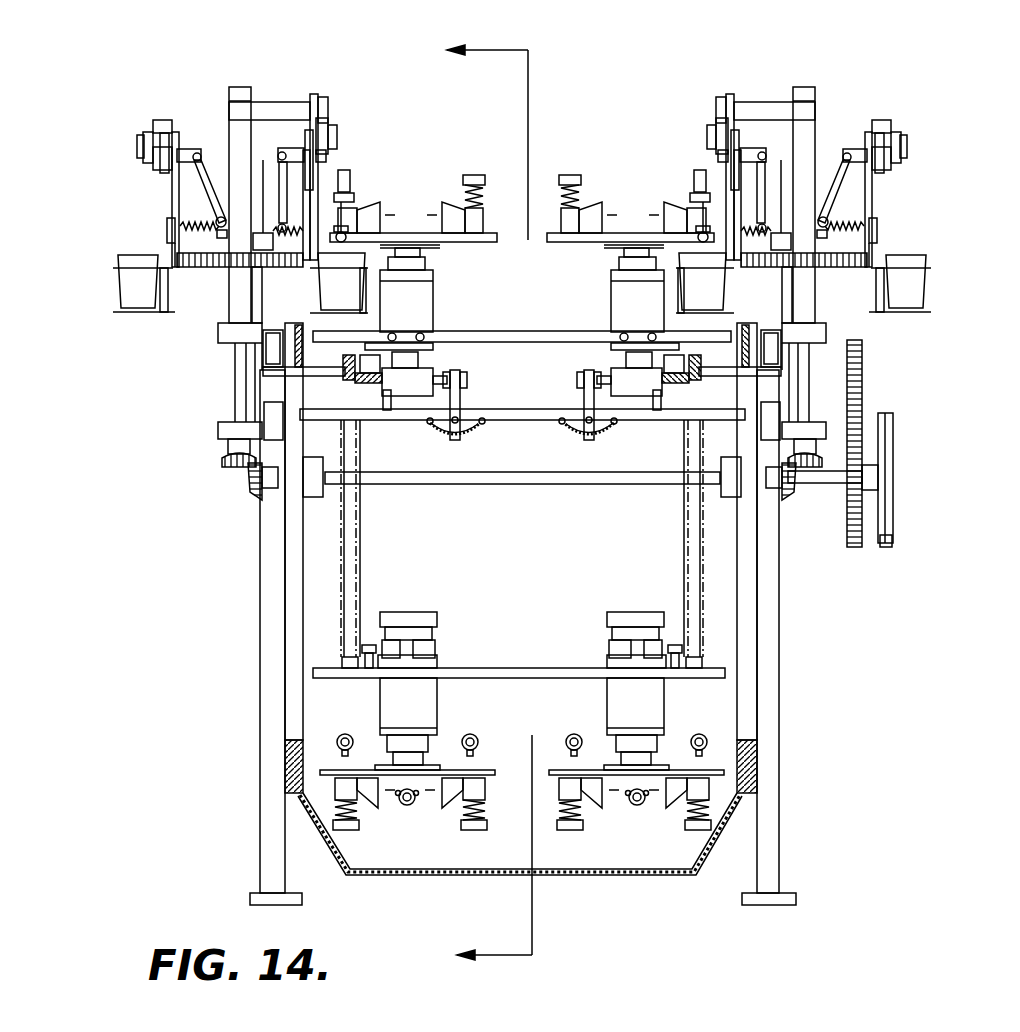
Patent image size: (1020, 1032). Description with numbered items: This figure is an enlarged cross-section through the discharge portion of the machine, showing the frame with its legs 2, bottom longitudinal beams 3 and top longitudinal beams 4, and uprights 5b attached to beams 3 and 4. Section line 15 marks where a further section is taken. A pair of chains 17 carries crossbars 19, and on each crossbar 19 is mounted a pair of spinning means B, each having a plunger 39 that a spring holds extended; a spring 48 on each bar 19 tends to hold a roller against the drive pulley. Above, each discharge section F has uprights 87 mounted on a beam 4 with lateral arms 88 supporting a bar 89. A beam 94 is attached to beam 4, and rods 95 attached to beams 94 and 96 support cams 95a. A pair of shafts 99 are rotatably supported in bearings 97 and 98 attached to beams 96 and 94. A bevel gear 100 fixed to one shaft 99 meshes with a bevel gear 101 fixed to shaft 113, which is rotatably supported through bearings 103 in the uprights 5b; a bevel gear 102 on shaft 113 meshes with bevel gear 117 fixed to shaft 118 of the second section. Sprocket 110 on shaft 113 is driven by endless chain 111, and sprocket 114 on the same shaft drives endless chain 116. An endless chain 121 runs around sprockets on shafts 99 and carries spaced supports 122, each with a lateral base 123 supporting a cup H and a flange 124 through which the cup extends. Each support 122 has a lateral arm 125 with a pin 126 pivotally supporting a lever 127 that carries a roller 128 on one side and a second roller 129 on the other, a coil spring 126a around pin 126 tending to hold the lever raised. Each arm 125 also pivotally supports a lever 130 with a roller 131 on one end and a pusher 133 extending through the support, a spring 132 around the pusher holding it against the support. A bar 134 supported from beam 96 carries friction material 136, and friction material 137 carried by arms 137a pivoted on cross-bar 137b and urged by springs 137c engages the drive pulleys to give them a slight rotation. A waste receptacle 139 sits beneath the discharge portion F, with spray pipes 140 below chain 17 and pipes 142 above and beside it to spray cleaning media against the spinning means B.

The legs 2 is at (270, 851).
The longitudinal beams 3 is at (286, 779).
The longitudinal beams 4 is at (303, 360).
The uprights 5b is at (810, 611).
The section line 15 is at (489, 495).
The chains 17 is at (362, 574).
The crossbar 19 is at (490, 332).
The plunger 39 is at (352, 192).
The spring 48 is at (818, 332).
The uprights 87 is at (238, 87).
The lateral arms 88 is at (265, 102).
The bar 89 is at (328, 106).
The beam 94 is at (236, 354).
The rods 95 is at (255, 383).
The cams 95a is at (830, 137).
The beam 96 is at (307, 432).
The bearings 97 is at (218, 432).
The bearings 98 is at (218, 332).
The shafts 99 is at (246, 366).
The bevel gear 100 is at (220, 470).
The bevel gear 101 is at (248, 494).
The bevel gear 102 is at (787, 497).
The bearings 103 is at (320, 477).
The sprocket 110 is at (847, 537).
The endless chain 111 is at (880, 510).
The shaft 113 is at (435, 485).
The sprocket 114 is at (878, 471).
The endless chain 116 is at (887, 548).
The bevel gear 117 is at (800, 462).
The shaft 118 is at (800, 387).
The endless chain 121 is at (240, 268).
The supports 122 is at (172, 208).
The lateral base 123 is at (892, 313).
The flange 124 is at (898, 268).
The lateral arm 125 is at (192, 150).
The pin 126 is at (163, 172).
The coil springs 126a is at (710, 147).
The lever 127 is at (145, 133).
The roller 128 is at (154, 128).
The roller 129 is at (138, 150).
The lever 130 is at (207, 186).
The roller 131 is at (220, 267).
The spring 132 is at (201, 224).
The pusher 133 is at (167, 230).
The bar 134 is at (355, 395).
The friction material 136 is at (384, 405).
The friction material 137 is at (442, 372).
The arms 137a is at (459, 380).
The cross-bar 137b is at (510, 422).
The springs 137c is at (437, 433).
The waste receptacle 139 is at (640, 878).
The spray pipes 140 is at (408, 804).
The pipes 142 is at (350, 735).
The cup H is at (125, 287).
The spinning means B is at (415, 710).
The discharge section F is at (292, 96).